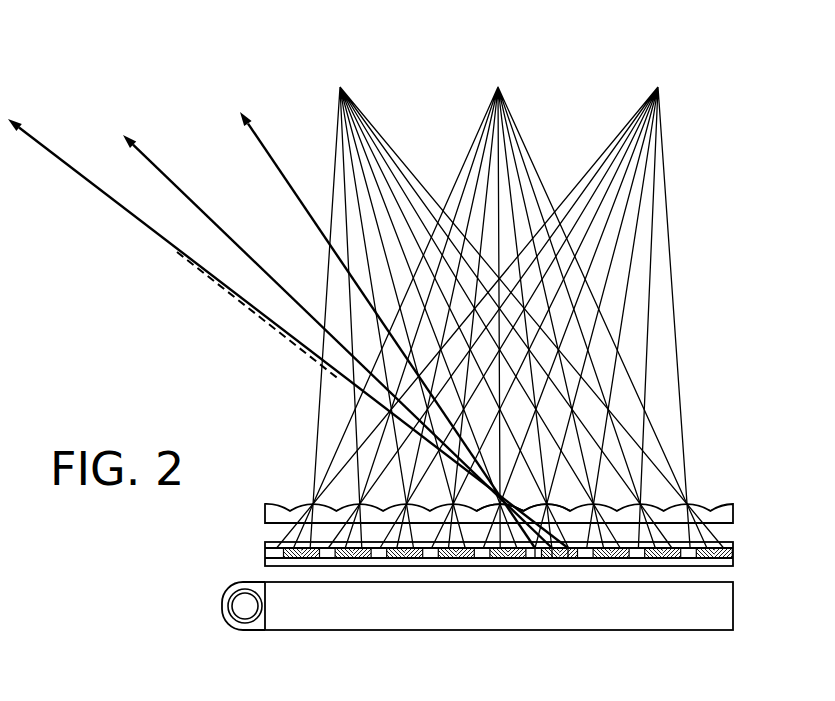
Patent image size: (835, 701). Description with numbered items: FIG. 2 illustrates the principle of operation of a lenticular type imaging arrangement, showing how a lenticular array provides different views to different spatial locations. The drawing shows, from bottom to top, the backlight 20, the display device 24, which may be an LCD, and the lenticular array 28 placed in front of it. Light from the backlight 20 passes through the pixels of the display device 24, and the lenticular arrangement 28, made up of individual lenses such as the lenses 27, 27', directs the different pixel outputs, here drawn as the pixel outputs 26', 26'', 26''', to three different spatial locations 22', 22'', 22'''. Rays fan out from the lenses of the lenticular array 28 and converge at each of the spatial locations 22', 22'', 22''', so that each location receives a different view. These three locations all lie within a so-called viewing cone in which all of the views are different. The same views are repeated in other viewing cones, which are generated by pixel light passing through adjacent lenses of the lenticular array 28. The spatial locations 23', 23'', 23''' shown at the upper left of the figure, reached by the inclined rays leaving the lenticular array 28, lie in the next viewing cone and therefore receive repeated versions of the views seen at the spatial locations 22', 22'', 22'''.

The backlight 20 is at (733, 607).
The spatial location 22' is at (483, 284).
The spatial location 22'' is at (500, 284).
The spatial location 22''' is at (516, 284).
The spatial location 23' is at (387, 309).
The spatial location 23'' is at (337, 309).
The spatial location 23''' is at (288, 309).
The display device 24 is at (733, 557).
The first sub-pixel 26' is at (507, 613).
The second sub-pixel 26'' is at (552, 613).
The third sub-pixel 26''' is at (599, 613).
The lenticular lens element 27 is at (652, 477).
The lenticular lens element 27' is at (387, 478).
The lenticular array 28 is at (733, 513).